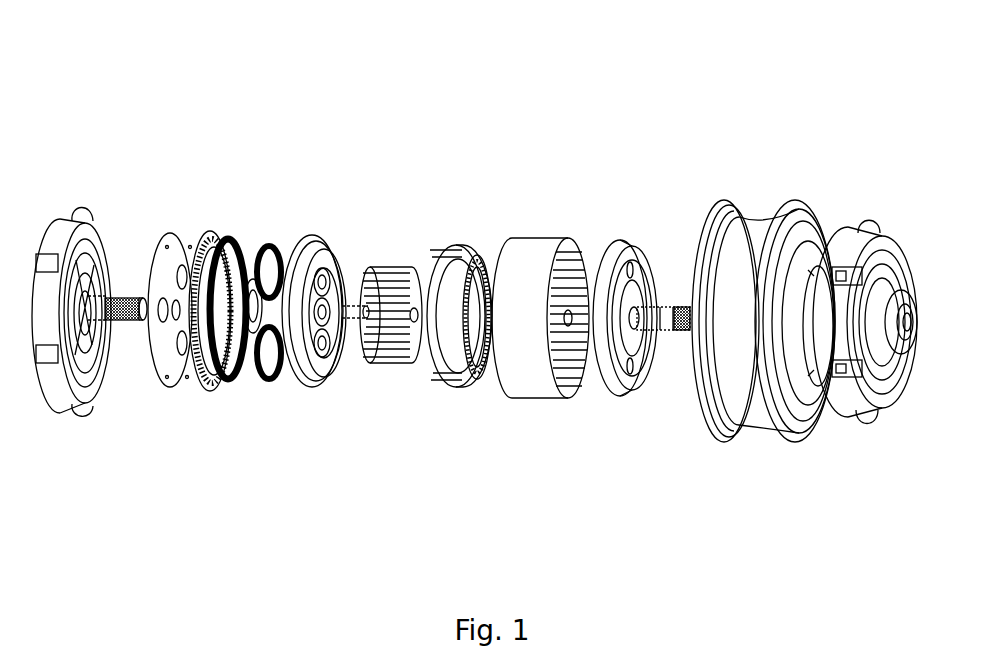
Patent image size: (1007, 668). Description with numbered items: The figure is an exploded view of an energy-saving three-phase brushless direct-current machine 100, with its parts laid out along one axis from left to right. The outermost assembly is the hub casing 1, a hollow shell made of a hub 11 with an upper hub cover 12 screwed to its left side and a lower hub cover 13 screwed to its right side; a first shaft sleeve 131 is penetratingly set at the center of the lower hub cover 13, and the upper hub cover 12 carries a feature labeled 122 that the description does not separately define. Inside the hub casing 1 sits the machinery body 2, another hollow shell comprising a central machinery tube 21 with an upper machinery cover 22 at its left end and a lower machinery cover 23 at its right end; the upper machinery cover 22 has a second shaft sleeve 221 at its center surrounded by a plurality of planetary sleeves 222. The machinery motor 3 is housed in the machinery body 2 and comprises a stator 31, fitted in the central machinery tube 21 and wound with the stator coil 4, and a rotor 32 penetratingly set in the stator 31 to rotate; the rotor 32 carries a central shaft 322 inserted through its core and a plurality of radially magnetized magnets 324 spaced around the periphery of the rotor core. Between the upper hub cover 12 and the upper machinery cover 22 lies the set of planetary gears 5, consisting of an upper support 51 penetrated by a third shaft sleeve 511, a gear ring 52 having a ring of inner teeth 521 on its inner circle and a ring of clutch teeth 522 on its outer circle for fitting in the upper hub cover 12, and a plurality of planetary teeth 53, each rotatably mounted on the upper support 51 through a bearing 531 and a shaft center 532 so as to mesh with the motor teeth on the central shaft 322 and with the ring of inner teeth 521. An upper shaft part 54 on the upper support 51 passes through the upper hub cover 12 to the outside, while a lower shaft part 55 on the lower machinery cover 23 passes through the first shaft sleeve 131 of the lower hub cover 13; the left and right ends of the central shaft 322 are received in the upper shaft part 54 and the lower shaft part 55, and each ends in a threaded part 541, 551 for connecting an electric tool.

The brushless DC machine 100 is at (745, 50).
The hub casing 1 is at (871, 498).
The hub 11 is at (758, 423).
The upper hub cover 12 is at (78, 403).
The mounting lug 122 is at (95, 216).
The lower hub cover 13 is at (880, 415).
The first shaft sleeve 131 is at (900, 293).
The machinery body 2 is at (610, 462).
The central machinery tube 21 is at (535, 388).
The upper machinery cover 22 is at (318, 384).
The second shaft sleeve 221 is at (323, 287).
The planetary sleeves 222 is at (323, 323).
The lower machinery cover 23 is at (623, 389).
The machinery motor 3 is at (472, 139).
The stator 31 is at (453, 240).
The rotor 32 is at (397, 262).
The central shaft 322 is at (353, 308).
The magnets 324 is at (383, 280).
The stator coil 4 is at (489, 252).
The set of planetary gears 5 is at (270, 118).
The upper support 51 is at (178, 235).
The third shaft sleeve 511 is at (179, 345).
The gear ring 52 is at (192, 149).
The ring of inner teeth 521 is at (240, 238).
The ring of clutch teeth 522 is at (218, 238).
The planetary teeth 53 is at (277, 247).
The bearing 531 is at (293, 250).
The shaft center 532 is at (287, 360).
The upper shaft part 54 is at (136, 304).
The threaded part 541 is at (118, 325).
The lower shaft part 55 is at (657, 302).
The threaded part 551 is at (684, 331).